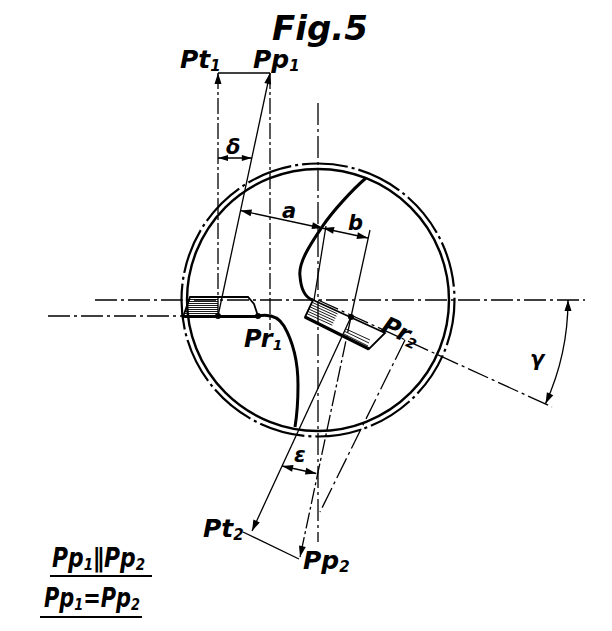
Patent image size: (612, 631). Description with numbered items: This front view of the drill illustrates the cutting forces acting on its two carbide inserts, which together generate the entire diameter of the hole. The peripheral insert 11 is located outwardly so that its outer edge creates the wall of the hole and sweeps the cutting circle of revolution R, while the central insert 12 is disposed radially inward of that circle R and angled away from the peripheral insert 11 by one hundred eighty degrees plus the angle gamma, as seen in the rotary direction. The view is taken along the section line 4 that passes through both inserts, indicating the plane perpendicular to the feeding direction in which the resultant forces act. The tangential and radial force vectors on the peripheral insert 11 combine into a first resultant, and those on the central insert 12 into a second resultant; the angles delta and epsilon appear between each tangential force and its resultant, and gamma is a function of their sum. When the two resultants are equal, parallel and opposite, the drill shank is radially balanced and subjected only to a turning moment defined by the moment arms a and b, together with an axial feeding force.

The peripheral insert 11 is at (238, 318).
The central insert 12 is at (354, 317).
The section line IV-IV 4 is at (46, 326).
The cutting circle of revolution R is at (194, 364).